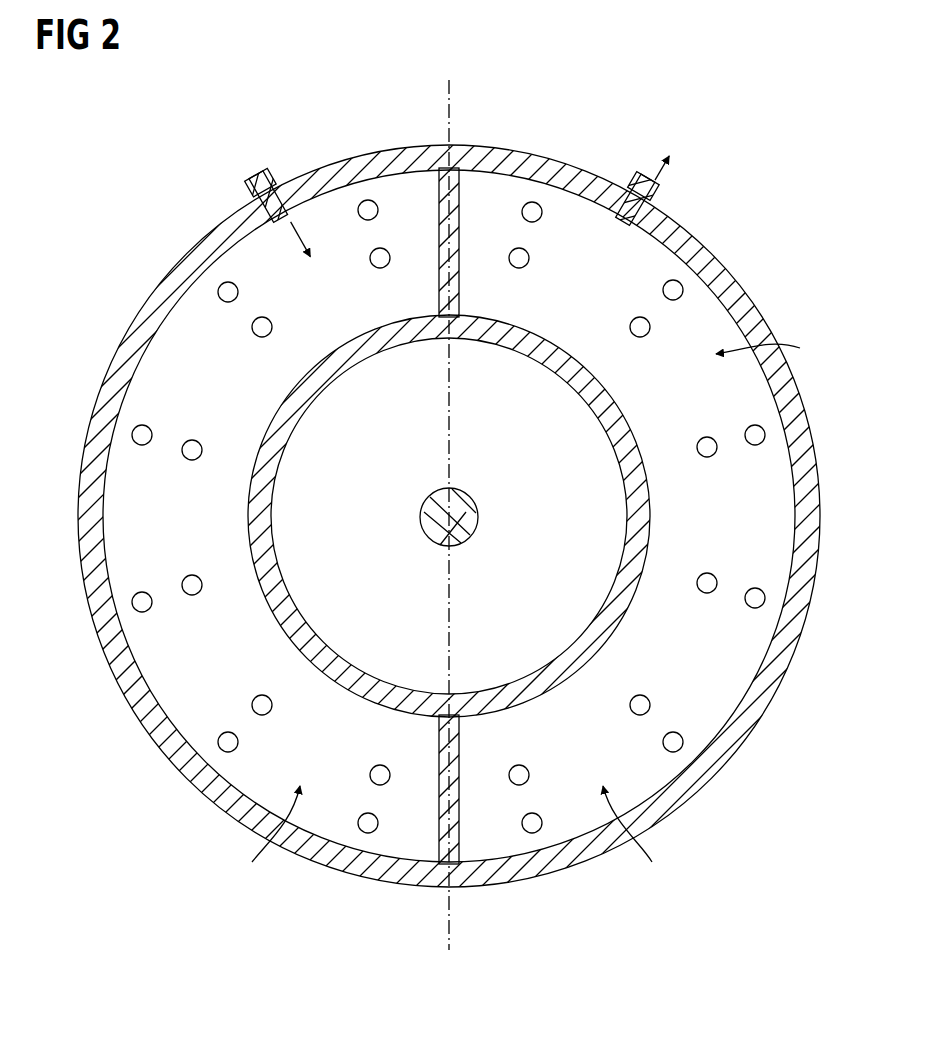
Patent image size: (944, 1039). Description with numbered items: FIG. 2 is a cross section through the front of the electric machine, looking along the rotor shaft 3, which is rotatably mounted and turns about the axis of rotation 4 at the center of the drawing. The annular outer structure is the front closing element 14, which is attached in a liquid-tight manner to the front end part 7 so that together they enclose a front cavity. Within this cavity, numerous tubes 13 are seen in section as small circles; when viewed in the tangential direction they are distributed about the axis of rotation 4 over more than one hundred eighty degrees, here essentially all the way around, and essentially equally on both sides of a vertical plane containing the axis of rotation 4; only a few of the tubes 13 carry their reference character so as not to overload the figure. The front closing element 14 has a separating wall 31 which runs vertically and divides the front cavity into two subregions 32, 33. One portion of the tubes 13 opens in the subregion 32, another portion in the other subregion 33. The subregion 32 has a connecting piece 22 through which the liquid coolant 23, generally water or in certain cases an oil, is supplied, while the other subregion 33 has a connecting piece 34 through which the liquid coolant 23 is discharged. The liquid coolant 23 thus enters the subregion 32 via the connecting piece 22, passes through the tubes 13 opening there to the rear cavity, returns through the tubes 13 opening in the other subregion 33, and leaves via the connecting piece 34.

The rotor shaft 3 is at (462, 540).
The axis of rotation 4 is at (478, 506).
The front end part 7 is at (768, 346).
The tubes 13 is at (186, 457).
The front closing element 14 is at (568, 178).
The connecting piece 22 is at (244, 190).
The liquid coolant 23 is at (292, 192).
The separating wall 31 is at (456, 210).
The subregion 32 is at (269, 844).
The other subregion 33 is at (635, 844).
The connecting piece 34 is at (668, 190).